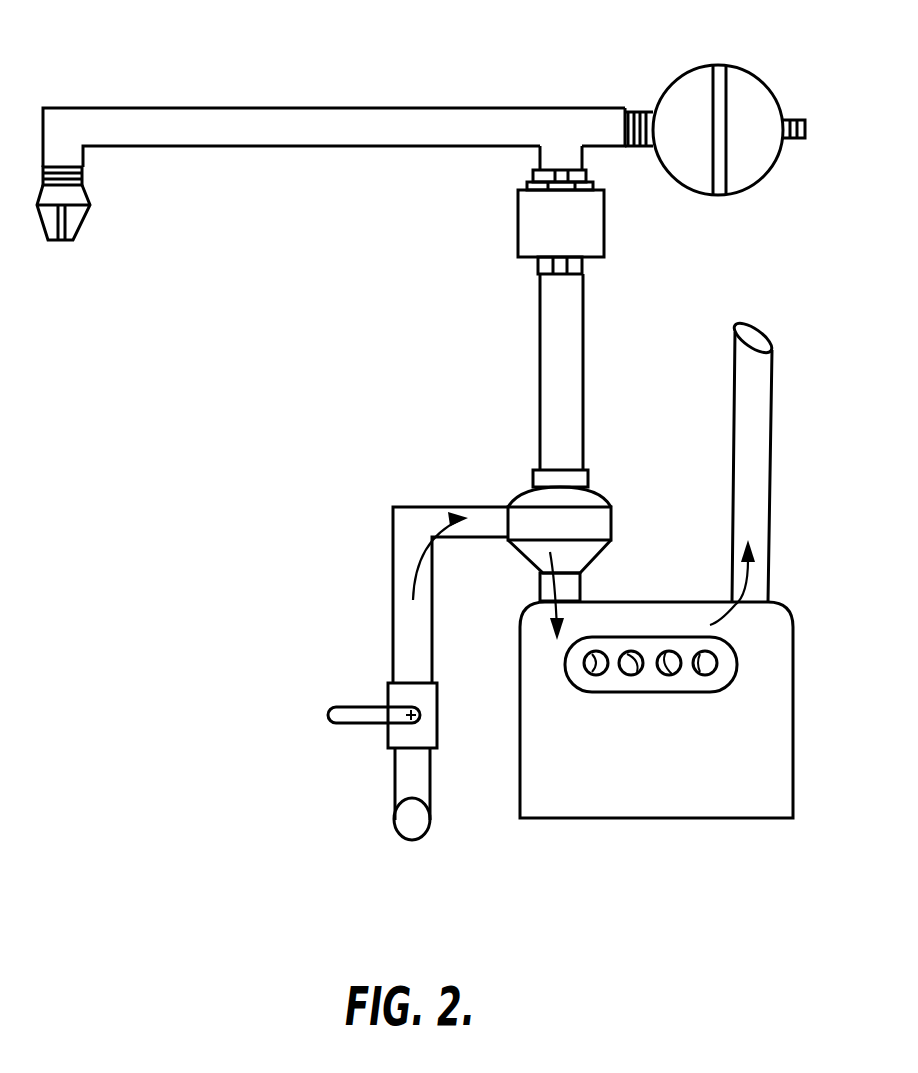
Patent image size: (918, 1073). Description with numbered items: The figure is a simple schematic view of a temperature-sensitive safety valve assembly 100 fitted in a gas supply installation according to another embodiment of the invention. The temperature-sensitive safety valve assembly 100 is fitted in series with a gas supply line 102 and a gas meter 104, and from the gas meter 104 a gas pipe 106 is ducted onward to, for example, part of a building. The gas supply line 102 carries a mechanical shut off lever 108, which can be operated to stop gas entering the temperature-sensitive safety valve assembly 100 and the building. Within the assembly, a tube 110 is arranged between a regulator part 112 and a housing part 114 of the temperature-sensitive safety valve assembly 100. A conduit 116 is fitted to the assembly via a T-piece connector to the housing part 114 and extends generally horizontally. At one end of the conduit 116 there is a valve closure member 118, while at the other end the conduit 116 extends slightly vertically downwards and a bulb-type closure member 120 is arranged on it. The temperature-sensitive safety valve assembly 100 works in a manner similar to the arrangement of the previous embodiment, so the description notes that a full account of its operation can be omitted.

The temperature-sensitive safety valve assembly 100 is at (327, 362).
The gas supply line 102 is at (393, 627).
The gas meter 104 is at (663, 818).
The gas pipe 106 is at (765, 422).
The mechanical shut off lever 108 is at (348, 728).
The tube 110 is at (540, 403).
The regulator part 112 is at (600, 497).
The housing part 114 is at (604, 230).
The conduit 116 is at (298, 112).
The valve closure member 118 is at (753, 72).
The bulb-type closure member 120 is at (84, 222).